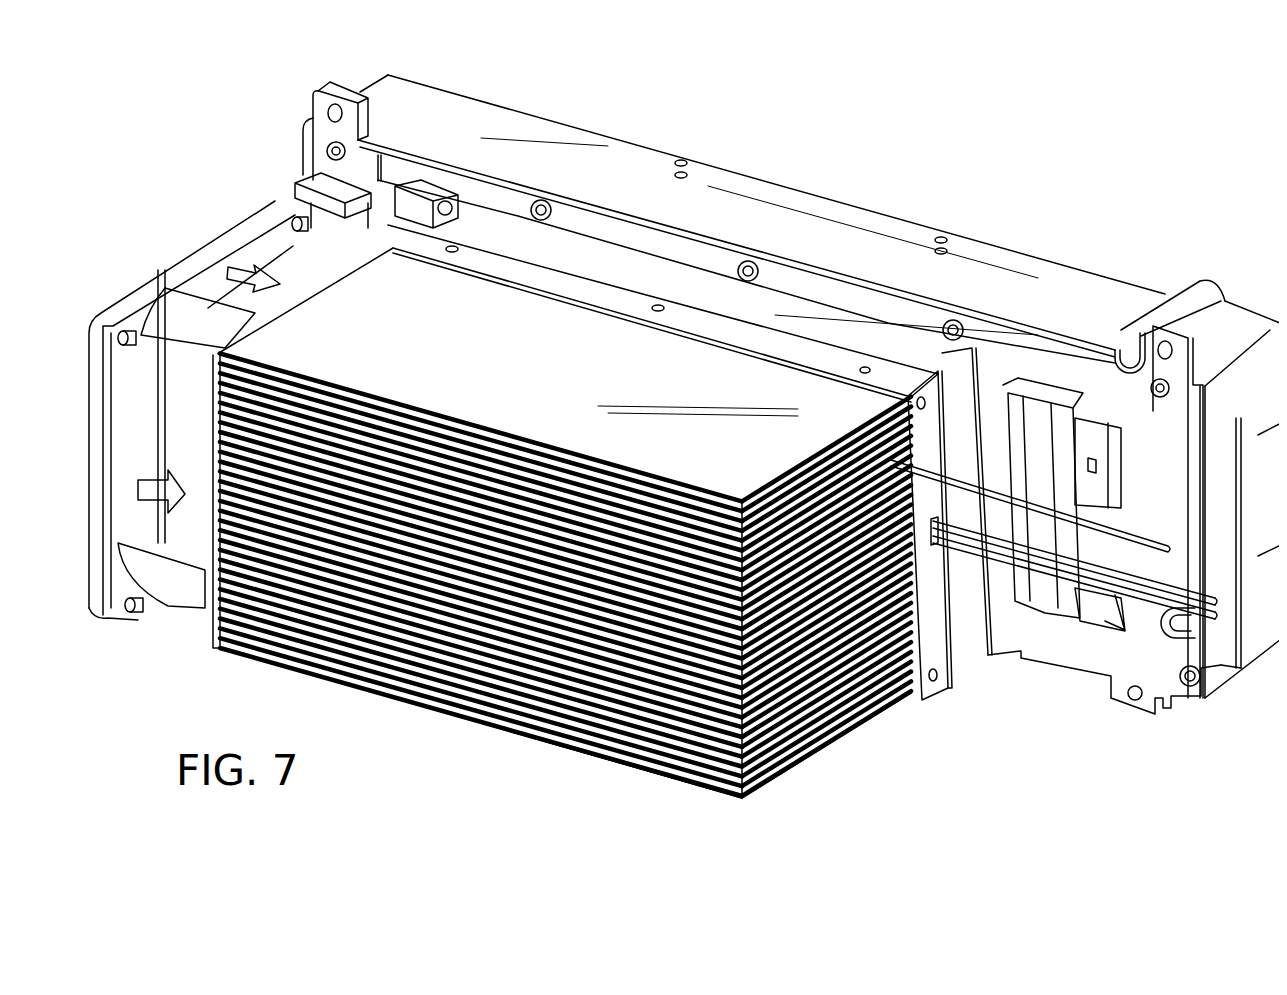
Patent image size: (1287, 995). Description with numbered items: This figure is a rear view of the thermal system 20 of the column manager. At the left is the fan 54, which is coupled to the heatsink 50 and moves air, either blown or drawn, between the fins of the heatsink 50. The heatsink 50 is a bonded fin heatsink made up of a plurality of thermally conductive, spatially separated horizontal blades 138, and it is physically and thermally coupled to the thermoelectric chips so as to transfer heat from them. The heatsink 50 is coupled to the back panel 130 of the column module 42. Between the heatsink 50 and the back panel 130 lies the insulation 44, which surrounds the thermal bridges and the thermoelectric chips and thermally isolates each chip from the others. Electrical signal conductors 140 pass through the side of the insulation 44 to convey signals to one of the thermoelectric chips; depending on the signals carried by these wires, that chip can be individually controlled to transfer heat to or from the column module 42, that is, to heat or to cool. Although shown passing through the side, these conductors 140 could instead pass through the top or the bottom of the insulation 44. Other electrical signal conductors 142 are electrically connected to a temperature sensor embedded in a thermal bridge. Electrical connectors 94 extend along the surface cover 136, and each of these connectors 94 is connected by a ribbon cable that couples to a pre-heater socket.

The thermal system 20 is at (949, 114).
The column module 42 is at (432, 92).
The insulation 44 is at (620, 262).
The heatsink 50 is at (483, 372).
The fan 54 is at (203, 257).
The electrical connectors 94 is at (1023, 423).
The back panel 130 is at (1035, 357).
The surface cover 136 is at (1163, 470).
The horizontal blades 138 is at (560, 640).
The electrical signal conductors 140 is at (1147, 582).
The electrical signal conductors 142 is at (1147, 530).